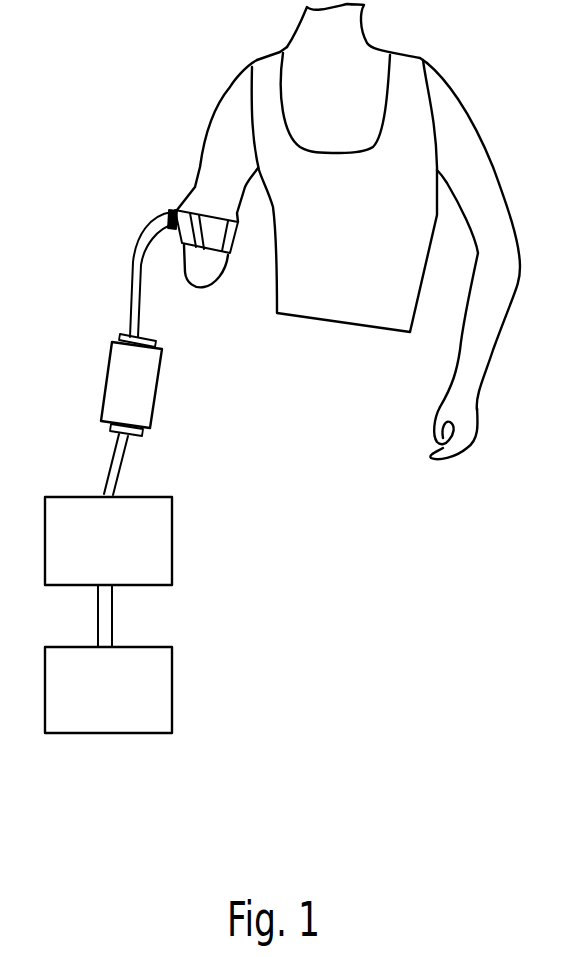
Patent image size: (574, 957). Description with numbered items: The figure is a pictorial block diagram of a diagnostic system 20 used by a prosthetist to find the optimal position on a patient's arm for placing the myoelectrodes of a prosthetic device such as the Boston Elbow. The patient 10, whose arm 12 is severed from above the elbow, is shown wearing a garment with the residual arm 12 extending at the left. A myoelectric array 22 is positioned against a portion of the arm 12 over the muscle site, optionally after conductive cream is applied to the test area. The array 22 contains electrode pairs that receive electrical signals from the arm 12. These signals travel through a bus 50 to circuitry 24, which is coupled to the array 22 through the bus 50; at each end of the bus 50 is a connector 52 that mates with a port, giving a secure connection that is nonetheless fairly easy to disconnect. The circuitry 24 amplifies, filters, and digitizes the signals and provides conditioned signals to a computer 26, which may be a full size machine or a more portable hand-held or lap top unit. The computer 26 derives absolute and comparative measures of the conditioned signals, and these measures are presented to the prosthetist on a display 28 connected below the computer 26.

The patient 10 is at (352, 251).
The arm 12 is at (233, 182).
The diagnostic system 20 is at (177, 386).
The myoelectric array 22 is at (183, 208).
The circuitry 24 is at (148, 401).
The computer 26 is at (173, 510).
The display 28 is at (173, 673).
The bus 50 is at (134, 287).
The connector 52 is at (172, 213).